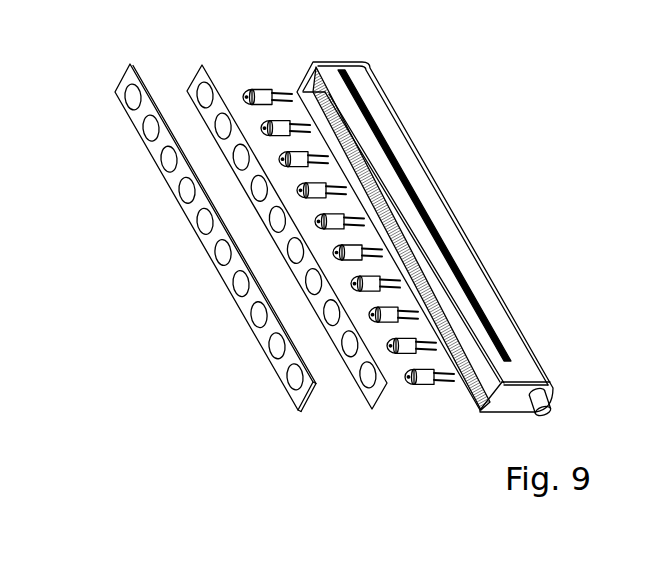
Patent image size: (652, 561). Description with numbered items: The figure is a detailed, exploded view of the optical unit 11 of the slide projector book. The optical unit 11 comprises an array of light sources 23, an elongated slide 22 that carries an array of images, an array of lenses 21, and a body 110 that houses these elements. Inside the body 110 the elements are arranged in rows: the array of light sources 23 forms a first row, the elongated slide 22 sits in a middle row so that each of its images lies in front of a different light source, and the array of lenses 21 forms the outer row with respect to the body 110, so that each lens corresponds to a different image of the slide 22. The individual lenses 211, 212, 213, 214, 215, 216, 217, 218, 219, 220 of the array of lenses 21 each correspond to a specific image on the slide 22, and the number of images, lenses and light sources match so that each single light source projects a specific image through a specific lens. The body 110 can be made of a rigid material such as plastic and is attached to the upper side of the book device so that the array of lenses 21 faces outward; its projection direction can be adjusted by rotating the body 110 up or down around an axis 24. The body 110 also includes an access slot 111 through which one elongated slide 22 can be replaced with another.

The optical unit 11 is at (459, 246).
The body 110 is at (453, 219).
The access slot 111 is at (478, 307).
The array of lenses 21 is at (193, 264).
The elongated slide 22 is at (382, 398).
The array of light sources 23 is at (262, 90).
The axis 24 is at (551, 404).
The lens 211 is at (125, 98).
The lens 212 is at (145, 130).
The lens 213 is at (162, 162).
The lens 214 is at (181, 199).
The lens 215 is at (200, 226).
The lens 216 is at (217, 258).
The lens 217 is at (233, 291).
The lens 218 is at (253, 321).
The lens 219 is at (273, 351).
The lens 220 is at (292, 385).